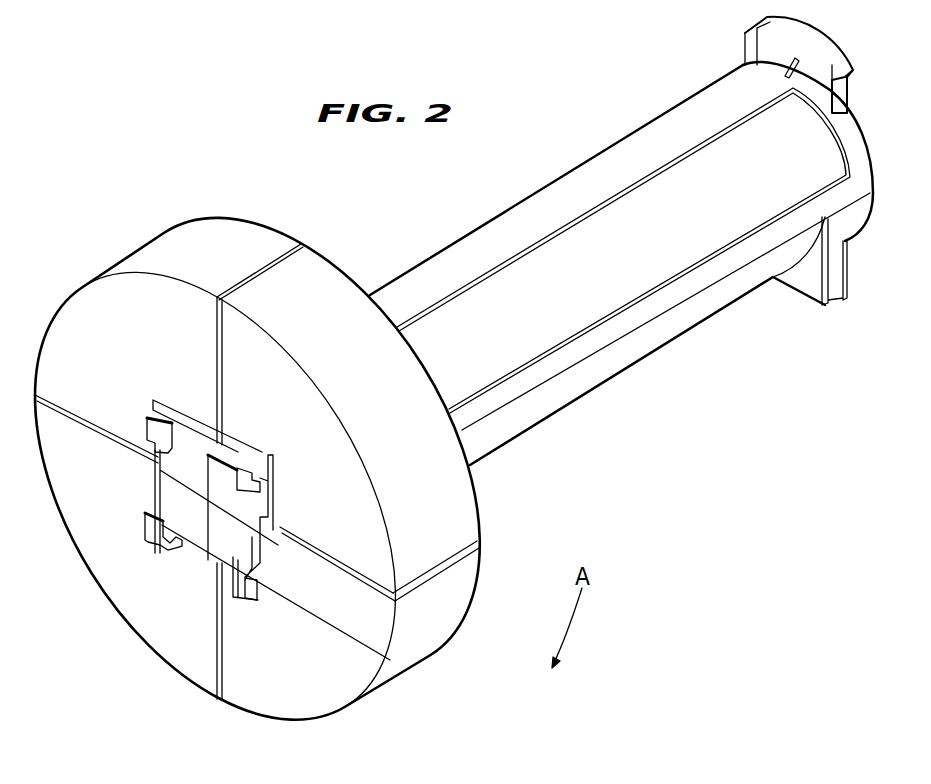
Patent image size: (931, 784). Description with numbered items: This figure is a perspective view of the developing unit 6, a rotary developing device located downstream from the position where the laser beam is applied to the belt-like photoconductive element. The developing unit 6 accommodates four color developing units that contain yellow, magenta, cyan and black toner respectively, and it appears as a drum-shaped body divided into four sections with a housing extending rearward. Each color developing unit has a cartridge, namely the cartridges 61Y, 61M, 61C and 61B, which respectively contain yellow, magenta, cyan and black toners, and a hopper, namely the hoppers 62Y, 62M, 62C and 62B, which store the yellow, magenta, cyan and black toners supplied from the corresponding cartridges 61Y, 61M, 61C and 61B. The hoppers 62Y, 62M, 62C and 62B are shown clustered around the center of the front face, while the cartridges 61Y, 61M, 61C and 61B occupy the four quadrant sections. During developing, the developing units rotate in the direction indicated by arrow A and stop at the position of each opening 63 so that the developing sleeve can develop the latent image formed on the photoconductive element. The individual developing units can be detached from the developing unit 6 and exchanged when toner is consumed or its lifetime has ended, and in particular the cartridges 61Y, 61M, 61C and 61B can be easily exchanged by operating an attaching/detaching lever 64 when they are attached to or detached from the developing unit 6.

The developing unit 6 is at (513, 138).
The cartridge 61B is at (54, 334).
The cartridge 61C is at (90, 547).
The cartridge 61Y is at (468, 511).
The cartridge 61M is at (466, 604).
The hopper 62B is at (183, 440).
The hopper 62C is at (168, 491).
The hopper 62Y is at (256, 519).
The hopper 62M is at (233, 576).
The opening 63 is at (632, 297).
The attaching/detaching lever 64 is at (156, 424).